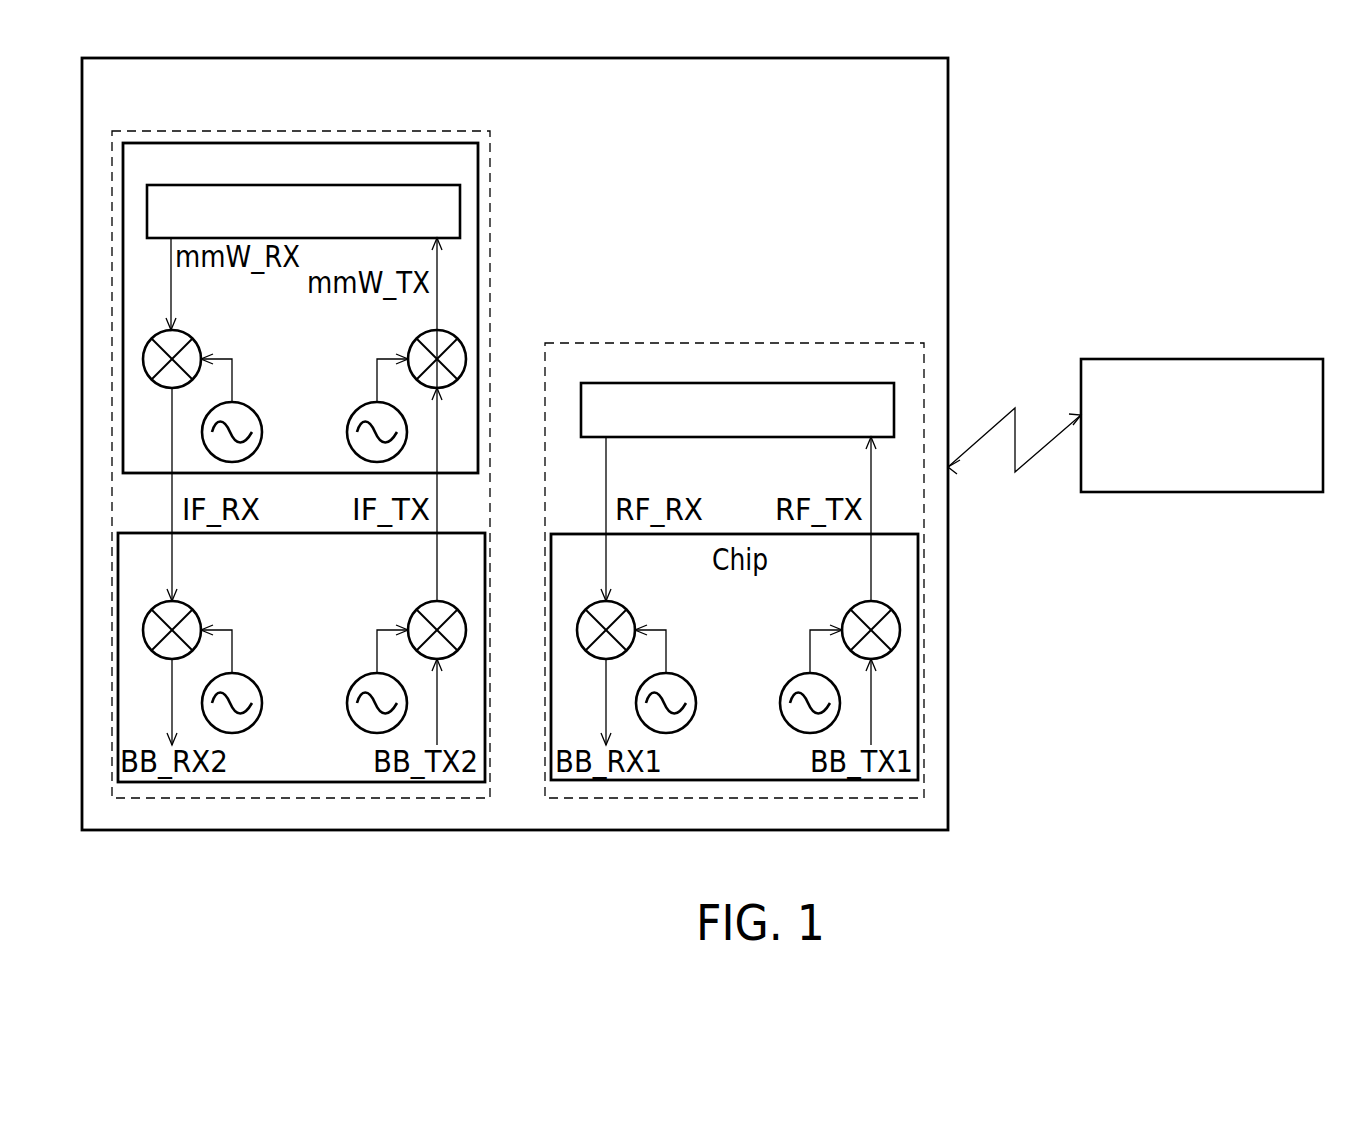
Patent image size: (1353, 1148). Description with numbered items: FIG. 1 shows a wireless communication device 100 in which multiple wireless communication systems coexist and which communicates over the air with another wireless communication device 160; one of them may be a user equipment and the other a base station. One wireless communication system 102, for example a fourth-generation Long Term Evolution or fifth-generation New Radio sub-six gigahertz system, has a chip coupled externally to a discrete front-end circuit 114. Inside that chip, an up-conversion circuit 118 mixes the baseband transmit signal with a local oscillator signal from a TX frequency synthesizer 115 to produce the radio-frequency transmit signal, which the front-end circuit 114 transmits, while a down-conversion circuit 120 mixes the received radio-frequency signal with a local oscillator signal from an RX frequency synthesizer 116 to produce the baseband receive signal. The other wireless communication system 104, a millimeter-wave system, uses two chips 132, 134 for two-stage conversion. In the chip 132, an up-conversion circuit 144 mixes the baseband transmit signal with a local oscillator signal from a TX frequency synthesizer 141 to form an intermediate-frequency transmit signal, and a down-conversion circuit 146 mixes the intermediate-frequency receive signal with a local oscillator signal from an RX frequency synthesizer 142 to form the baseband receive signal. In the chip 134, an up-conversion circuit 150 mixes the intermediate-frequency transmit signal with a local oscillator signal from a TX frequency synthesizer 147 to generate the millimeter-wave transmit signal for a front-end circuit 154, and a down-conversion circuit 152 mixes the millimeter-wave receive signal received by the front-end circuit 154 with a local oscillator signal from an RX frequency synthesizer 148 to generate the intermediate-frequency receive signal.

The wireless communication device 100 is at (948, 117).
The wireless communication system 102 is at (745, 343).
The wireless communication system 104 is at (490, 203).
The front-end circuit 114 is at (815, 383).
The TX frequency synthesizer 115 is at (781, 700).
The RX frequency synthesizer 116 is at (696, 702).
The up-conversion circuit 118 is at (847, 616).
The down-conversion circuit 120 is at (630, 610).
The chip 132 is at (520, 518).
The chip 134 is at (478, 320).
The TX frequency synthesizer 141 is at (348, 700).
The RX frequency synthesizer 142 is at (262, 702).
The up-conversion circuit 144 is at (413, 616).
The down-conversion circuit 146 is at (196, 608).
The TX frequency synthesizer 147 is at (348, 428).
The RX frequency synthesizer 148 is at (262, 430).
The up-conversion circuit 150 is at (412, 342).
The down-conversion circuit 152 is at (228, 318).
The front-end circuit 154 is at (380, 185).
The wireless communication device 160 is at (1242, 357).